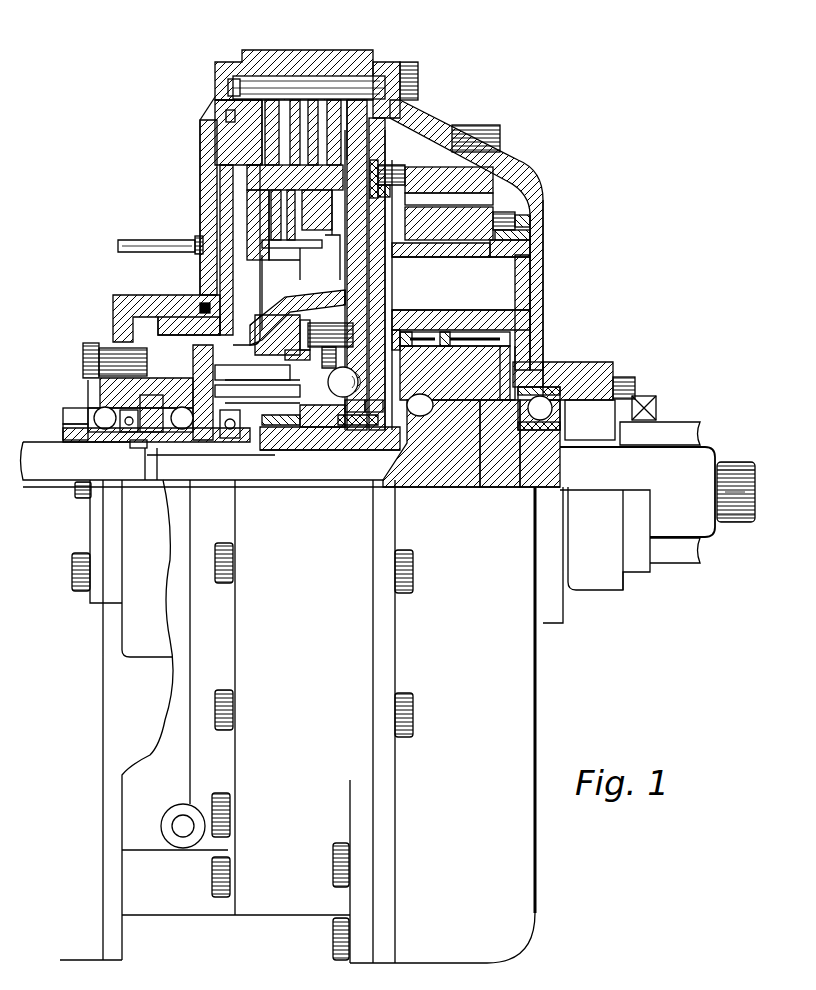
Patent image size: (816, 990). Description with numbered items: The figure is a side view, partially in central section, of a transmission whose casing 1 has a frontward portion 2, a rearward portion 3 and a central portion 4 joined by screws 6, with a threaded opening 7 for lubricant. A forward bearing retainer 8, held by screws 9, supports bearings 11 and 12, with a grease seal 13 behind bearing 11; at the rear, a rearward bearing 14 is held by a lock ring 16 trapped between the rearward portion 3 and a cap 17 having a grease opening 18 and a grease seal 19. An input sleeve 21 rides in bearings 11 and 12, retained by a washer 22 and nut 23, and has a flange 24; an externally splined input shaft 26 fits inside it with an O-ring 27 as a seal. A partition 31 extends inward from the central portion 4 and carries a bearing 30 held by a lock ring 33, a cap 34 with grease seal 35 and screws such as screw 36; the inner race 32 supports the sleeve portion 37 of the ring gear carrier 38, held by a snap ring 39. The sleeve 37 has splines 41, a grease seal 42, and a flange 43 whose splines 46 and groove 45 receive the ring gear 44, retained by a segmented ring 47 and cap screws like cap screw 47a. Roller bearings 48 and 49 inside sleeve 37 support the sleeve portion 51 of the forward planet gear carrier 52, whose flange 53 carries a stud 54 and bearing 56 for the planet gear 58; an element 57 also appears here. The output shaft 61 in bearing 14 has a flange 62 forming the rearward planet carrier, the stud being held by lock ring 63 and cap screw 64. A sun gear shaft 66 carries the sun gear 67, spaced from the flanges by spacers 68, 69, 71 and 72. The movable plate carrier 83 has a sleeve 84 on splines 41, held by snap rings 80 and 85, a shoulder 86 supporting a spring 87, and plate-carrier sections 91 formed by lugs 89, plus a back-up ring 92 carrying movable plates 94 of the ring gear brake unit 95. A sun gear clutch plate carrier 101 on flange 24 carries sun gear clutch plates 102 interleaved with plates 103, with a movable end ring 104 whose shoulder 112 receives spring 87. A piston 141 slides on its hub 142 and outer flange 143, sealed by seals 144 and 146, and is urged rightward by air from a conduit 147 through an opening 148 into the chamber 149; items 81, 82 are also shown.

The casing 1 is at (538, 178).
The frontward portion 2 is at (200, 205).
The rearward portion 3 is at (546, 192).
The central portion 4 is at (310, 52).
The screws 6 is at (415, 65).
The threaded opening 7 is at (480, 128).
The forward bearing retainer 8 is at (158, 380).
The screws 9 is at (85, 355).
The bearing 11 is at (88, 412).
The bearing 12 is at (180, 407).
The grease seal 13 is at (133, 448).
The rearward bearing 14 is at (580, 372).
The lock ring 16 is at (545, 365).
The cap 17 is at (595, 400).
The grease opening 18 is at (630, 378).
The grease seal 19 is at (660, 410).
The input sleeve 21 is at (195, 444).
The washer 22 is at (63, 432).
The nut 23 is at (62, 414).
The flange 24 is at (252, 368).
The input shaft 26 is at (38, 482).
The O-ring 27 is at (140, 482).
The bearing 30 is at (371, 408).
The partition 31 is at (368, 143).
The inner race 32 is at (351, 408).
The lock ring 33 is at (322, 357).
The cap 34 is at (324, 331).
The grease seal 35 is at (322, 373).
The screw 36 is at (298, 341).
The sleeve portion 37 is at (340, 430).
The ring gear carrier 38 is at (387, 286).
The snap ring 39 is at (305, 440).
The splines 41 is at (257, 392).
The grease seal 42 is at (235, 440).
The flange 43 is at (394, 302).
The ring gear 44 is at (428, 178).
The circumferential groove 45 is at (415, 196).
The splines 46 is at (390, 185).
The segmented ring 47 is at (396, 165).
The cap screw 47a is at (379, 172).
The roller bearings 48 is at (278, 427).
The roller bearings 49 is at (360, 430).
The sleeve portion 51 is at (315, 452).
The forward planet gear carrier 52 is at (403, 409).
The flange 53 is at (412, 348).
The stud 54 is at (455, 318).
The bearing 56 is at (466, 262).
The screw 57 is at (503, 225).
The planet gear 58 is at (404, 258).
The output shaft 61 is at (705, 447).
The flange 62 is at (510, 335).
The lock ring 63 is at (532, 247).
The cap screw 64 is at (532, 222).
The sun gear shaft 66 is at (162, 500).
The sun gear 67 is at (462, 482).
The spacer 68 is at (520, 488).
The spacer 69 is at (408, 430).
The spacer 71 is at (465, 360).
The spacer 72 is at (393, 342).
The snap ring 80 is at (203, 392).
The wall 81 is at (355, 100).
The bolt 82 is at (306, 87).
The ring gear movable plate carrier 83 is at (298, 297).
The sleeve 84 is at (262, 380).
The snap ring 85 is at (262, 406).
The shoulder 86 is at (335, 291).
The spring 87 is at (333, 257).
The lugs 89 is at (353, 280).
The plate-carrier sections 91 is at (238, 132).
The back-up ring 92 is at (252, 225).
The movable plate 94 is at (268, 100).
The ring gear brake unit 95 is at (388, 70).
The sun gear clutch plate carrier 101 is at (241, 255).
The sun gear clutch plates 102 is at (277, 244).
The plates 103 is at (262, 290).
The movable end ring 104 is at (302, 264).
The shoulder 112 is at (295, 177).
The piston 141 is at (214, 186).
The hub 142 is at (178, 300).
The outer flange 143 is at (232, 104).
The seal 144 is at (200, 305).
The seal 146 is at (226, 120).
The conduit 147 is at (118, 240).
The opening 148 is at (199, 236).
The chamber 149 is at (222, 162).